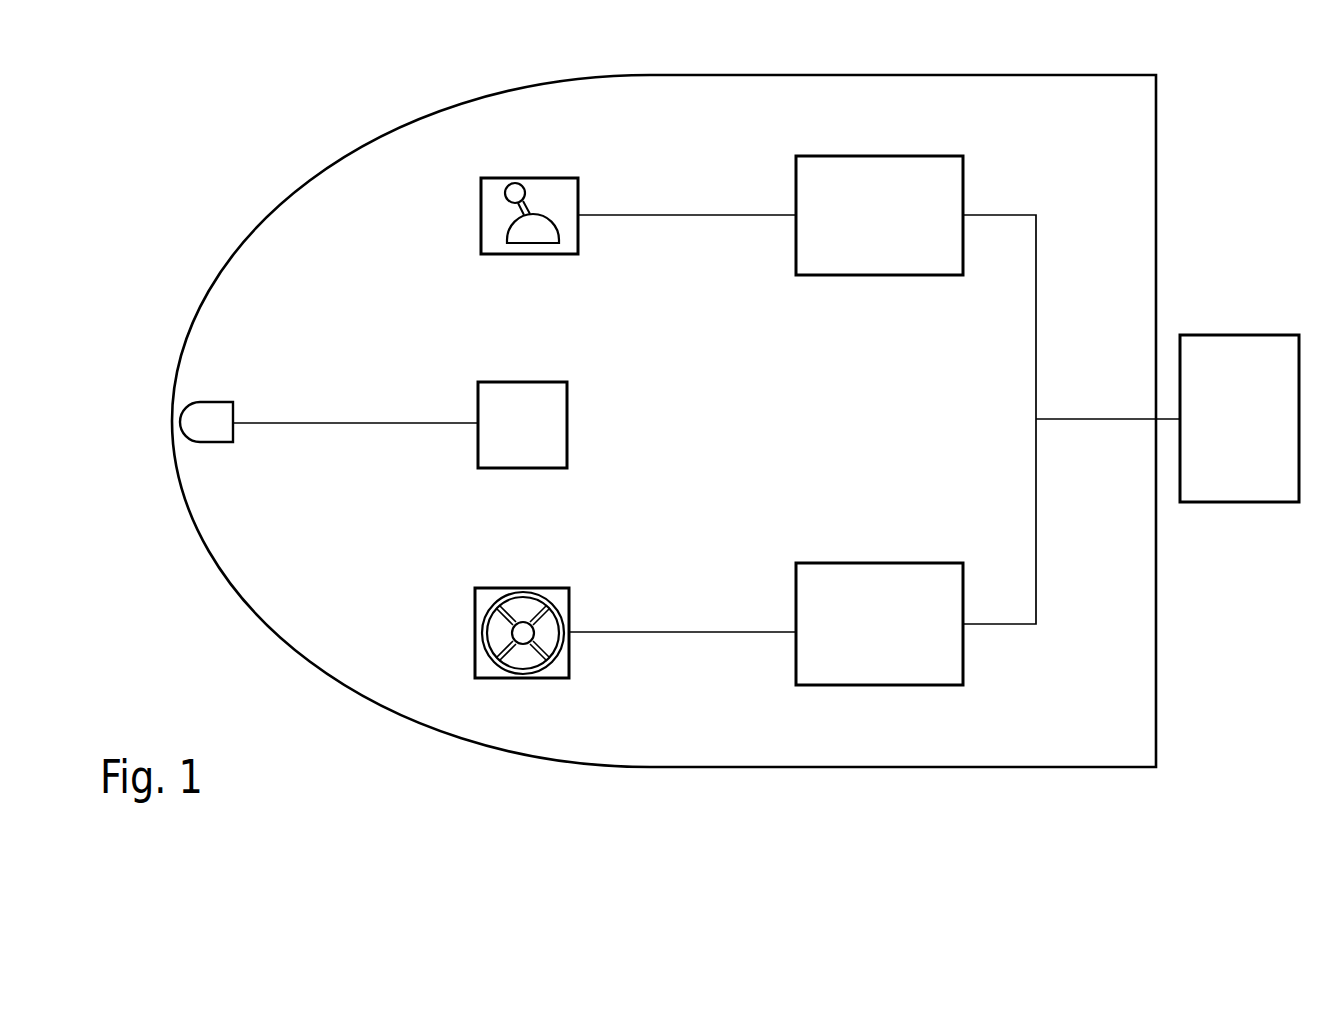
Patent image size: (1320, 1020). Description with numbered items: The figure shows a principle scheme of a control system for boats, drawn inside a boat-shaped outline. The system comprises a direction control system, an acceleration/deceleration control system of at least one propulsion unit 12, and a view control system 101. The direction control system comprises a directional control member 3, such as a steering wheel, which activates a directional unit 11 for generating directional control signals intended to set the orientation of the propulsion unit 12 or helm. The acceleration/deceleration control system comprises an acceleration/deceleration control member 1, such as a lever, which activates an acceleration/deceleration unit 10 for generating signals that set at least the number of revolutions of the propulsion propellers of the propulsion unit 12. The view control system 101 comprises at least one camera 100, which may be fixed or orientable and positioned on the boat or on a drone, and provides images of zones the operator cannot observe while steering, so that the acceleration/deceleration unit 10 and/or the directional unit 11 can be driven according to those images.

The acceleration/deceleration control member 1 is at (481, 200).
The directional control member 3 is at (483, 598).
The acceleration/deceleration unit 10 is at (900, 275).
The directional unit 11 is at (870, 563).
The propulsion unit 12 is at (1203, 482).
The camera 100 is at (218, 427).
The view control system 101 is at (540, 418).